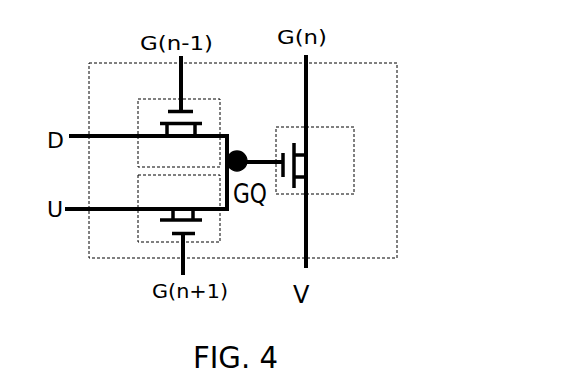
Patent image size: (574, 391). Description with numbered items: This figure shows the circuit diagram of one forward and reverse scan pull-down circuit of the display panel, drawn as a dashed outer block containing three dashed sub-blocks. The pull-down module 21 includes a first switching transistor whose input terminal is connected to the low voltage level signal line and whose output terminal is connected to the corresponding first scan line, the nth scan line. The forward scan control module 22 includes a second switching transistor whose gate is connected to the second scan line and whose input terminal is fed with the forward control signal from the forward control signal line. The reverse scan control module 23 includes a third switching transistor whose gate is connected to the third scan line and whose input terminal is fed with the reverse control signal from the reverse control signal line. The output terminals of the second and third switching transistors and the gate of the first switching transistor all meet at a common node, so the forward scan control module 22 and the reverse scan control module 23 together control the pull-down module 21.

The pull-down module 21 is at (355, 143).
The forward scan control module 22 is at (137, 232).
The reverse scan control module 23 is at (137, 108).